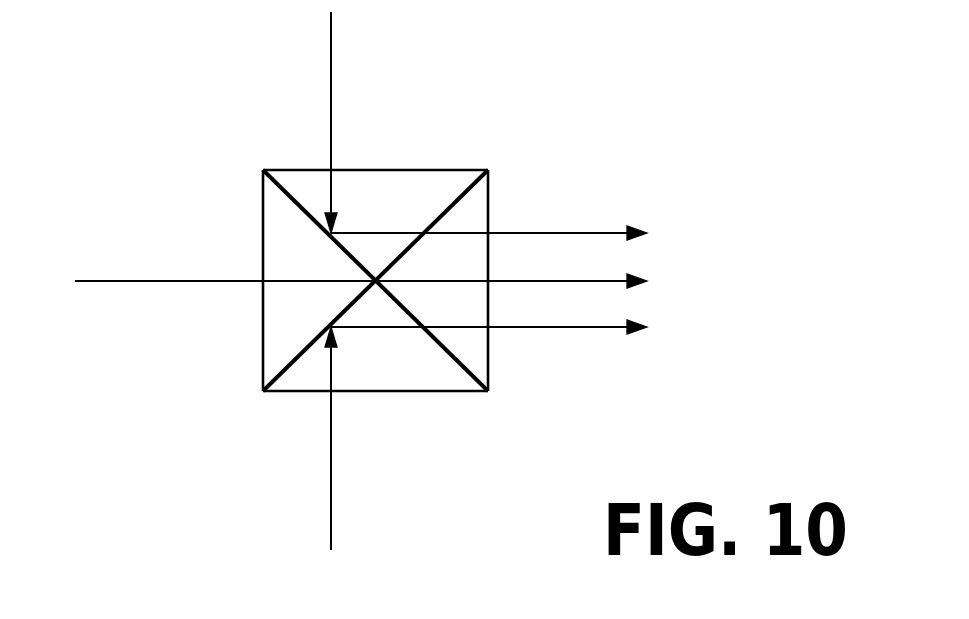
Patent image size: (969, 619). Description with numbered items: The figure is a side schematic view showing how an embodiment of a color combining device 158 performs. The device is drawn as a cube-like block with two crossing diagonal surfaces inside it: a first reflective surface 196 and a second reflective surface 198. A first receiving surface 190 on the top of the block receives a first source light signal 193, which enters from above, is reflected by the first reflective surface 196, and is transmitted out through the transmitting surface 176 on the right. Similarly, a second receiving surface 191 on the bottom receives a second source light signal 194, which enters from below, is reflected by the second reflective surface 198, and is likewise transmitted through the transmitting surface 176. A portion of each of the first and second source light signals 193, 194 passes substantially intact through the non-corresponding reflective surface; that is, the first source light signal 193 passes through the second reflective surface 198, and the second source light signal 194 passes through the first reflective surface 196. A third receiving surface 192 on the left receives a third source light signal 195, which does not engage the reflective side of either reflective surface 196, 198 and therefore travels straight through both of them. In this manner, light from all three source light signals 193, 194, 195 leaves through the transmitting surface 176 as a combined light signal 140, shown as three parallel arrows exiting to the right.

The color combining device 158 is at (489, 97).
The first receiving surface 190 is at (385, 170).
The second receiving surface 191 is at (422, 393).
The third receiving surface 192 is at (262, 328).
The transmitting surface 176 is at (489, 362).
The first reflective surface 196 is at (300, 203).
The second reflective surface 198 is at (290, 366).
The first source light signal 193 is at (331, 57).
The second source light signal 194 is at (331, 500).
The third source light signal 195 is at (142, 281).
The combined light signal 140 is at (583, 233).